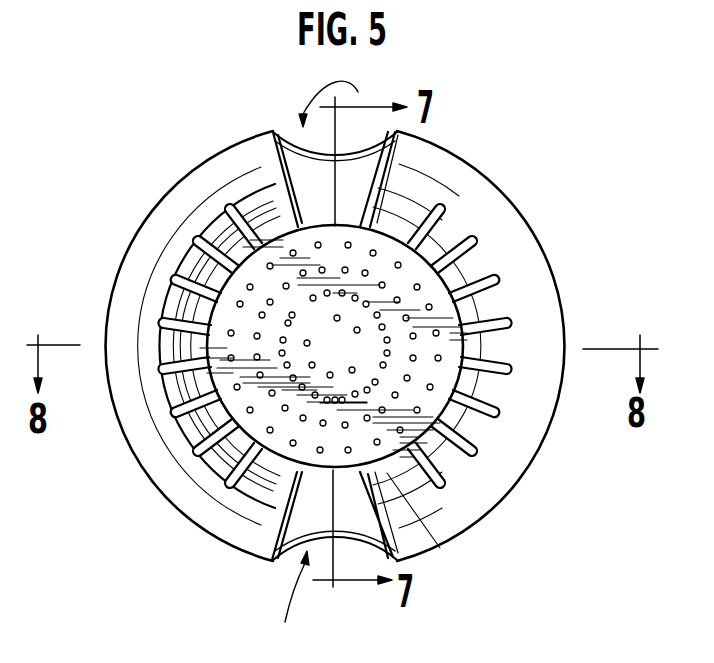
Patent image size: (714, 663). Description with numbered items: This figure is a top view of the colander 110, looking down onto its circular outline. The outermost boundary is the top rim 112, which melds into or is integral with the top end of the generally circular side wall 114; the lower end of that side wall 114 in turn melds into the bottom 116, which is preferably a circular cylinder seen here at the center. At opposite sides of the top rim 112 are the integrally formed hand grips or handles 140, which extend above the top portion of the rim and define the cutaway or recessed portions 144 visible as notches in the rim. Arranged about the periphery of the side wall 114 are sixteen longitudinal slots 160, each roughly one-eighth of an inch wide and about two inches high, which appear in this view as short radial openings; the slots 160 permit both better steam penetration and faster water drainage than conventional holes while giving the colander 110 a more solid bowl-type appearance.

The colander 110 is at (557, 293).
The top rim 112 is at (512, 202).
The circular side wall 114 is at (503, 483).
The bottom 116 is at (440, 548).
The handles 140 is at (300, 148).
The recessed portions 144 is at (330, 367).
The longitudinal slots 160 is at (477, 253).